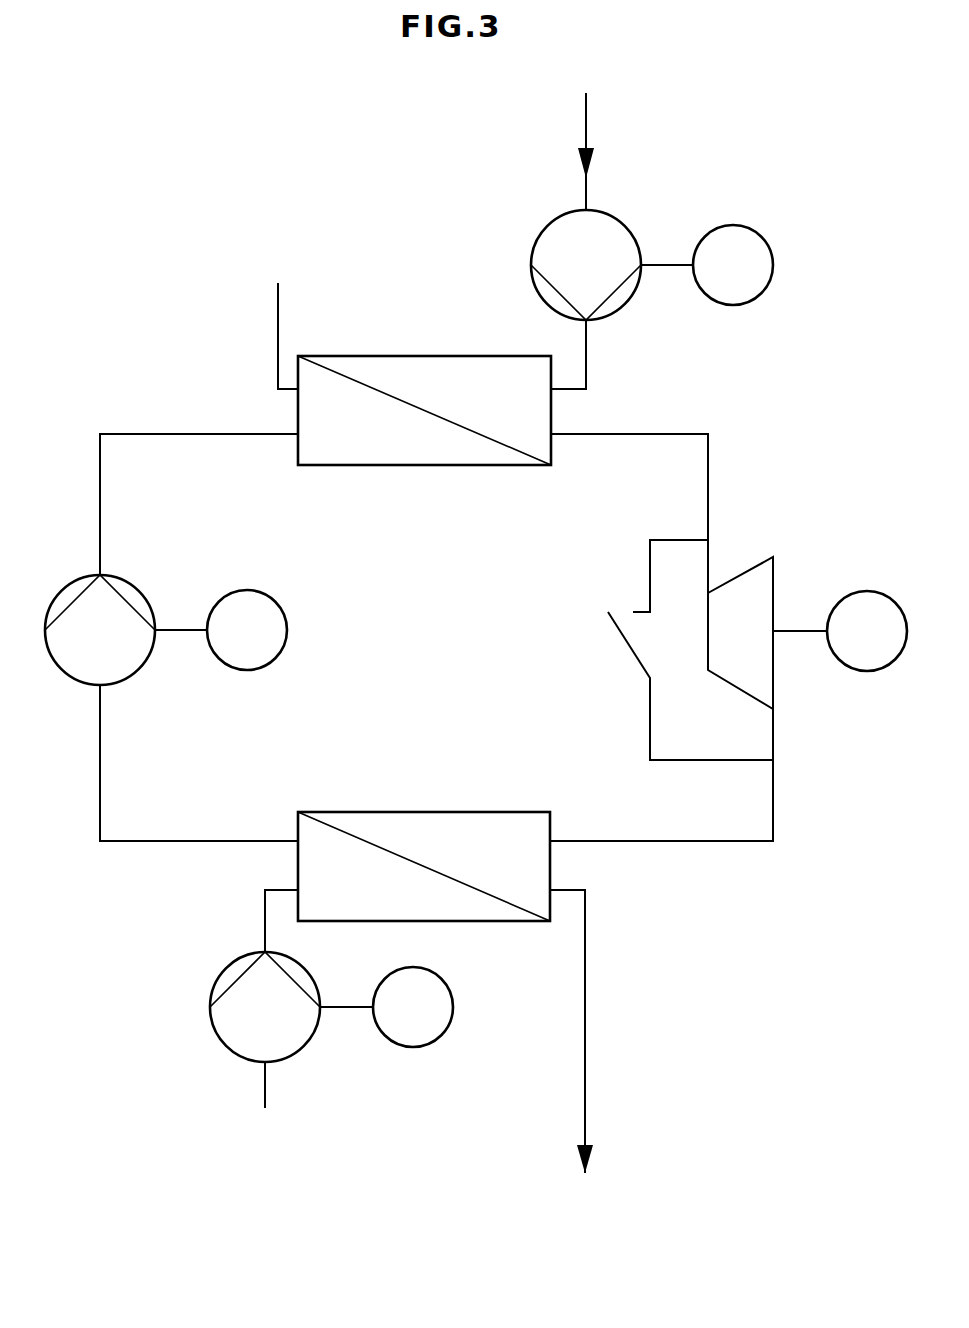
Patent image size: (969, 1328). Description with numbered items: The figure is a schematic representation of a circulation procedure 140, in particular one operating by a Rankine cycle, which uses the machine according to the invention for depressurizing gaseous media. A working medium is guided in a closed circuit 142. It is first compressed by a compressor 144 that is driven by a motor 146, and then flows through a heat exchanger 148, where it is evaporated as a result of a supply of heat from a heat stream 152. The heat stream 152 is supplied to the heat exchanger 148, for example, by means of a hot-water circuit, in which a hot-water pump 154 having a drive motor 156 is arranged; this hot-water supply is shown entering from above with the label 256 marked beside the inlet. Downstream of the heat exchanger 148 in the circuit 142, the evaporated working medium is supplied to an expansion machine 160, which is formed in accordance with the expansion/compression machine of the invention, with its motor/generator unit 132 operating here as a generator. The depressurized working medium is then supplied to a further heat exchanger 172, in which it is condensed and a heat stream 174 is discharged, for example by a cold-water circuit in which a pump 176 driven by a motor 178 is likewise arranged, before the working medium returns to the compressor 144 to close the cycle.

The motor/generator unit 132 is at (865, 580).
The circulation procedure 140 is at (745, 423).
The circuit 142 is at (128, 857).
The compressor 144 is at (72, 660).
The motor 146 is at (270, 637).
The heat exchanger 148 is at (404, 382).
The heat stream 152 is at (587, 112).
The hot-water pump 154 is at (555, 243).
The drive motor 156 is at (752, 258).
The expansion machine 160 is at (752, 560).
The further heat exchanger 172 is at (472, 837).
The heat stream 174 is at (587, 1117).
The pump 176 is at (243, 1032).
The motor 178 is at (415, 1035).
The heat source 256 is at (774, 117).